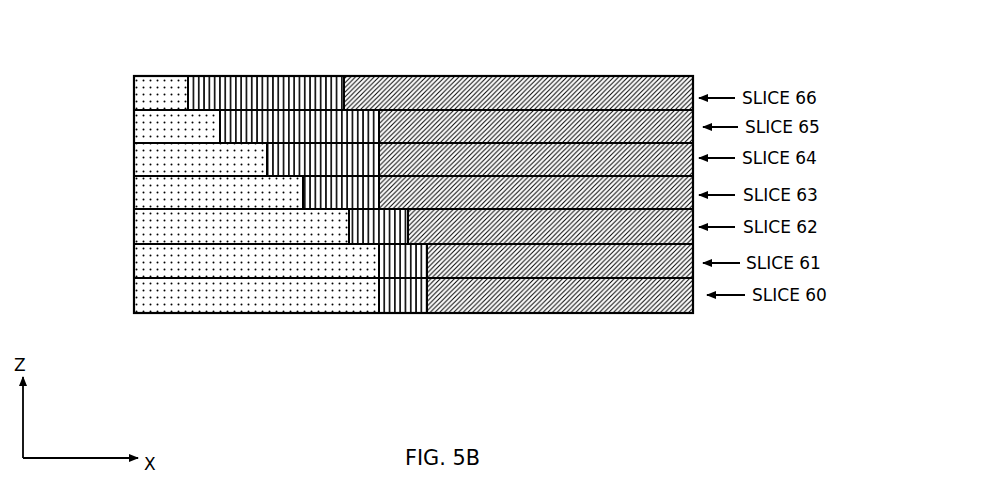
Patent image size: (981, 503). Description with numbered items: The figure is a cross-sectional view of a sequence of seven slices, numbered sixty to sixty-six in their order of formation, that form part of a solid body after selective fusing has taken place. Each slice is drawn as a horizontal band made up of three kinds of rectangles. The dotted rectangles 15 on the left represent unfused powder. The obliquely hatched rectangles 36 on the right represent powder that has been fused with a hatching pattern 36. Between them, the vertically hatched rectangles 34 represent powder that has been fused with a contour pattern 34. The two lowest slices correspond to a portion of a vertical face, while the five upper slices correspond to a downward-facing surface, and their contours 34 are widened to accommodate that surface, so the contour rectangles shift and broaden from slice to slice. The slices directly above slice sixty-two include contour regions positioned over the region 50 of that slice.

The dotted rectangles 15 is at (158, 165).
The vertically hatched rectangles 34 is at (232, 90).
The obliquely hatched rectangles 36 is at (580, 92).
The region 50 is at (363, 230).